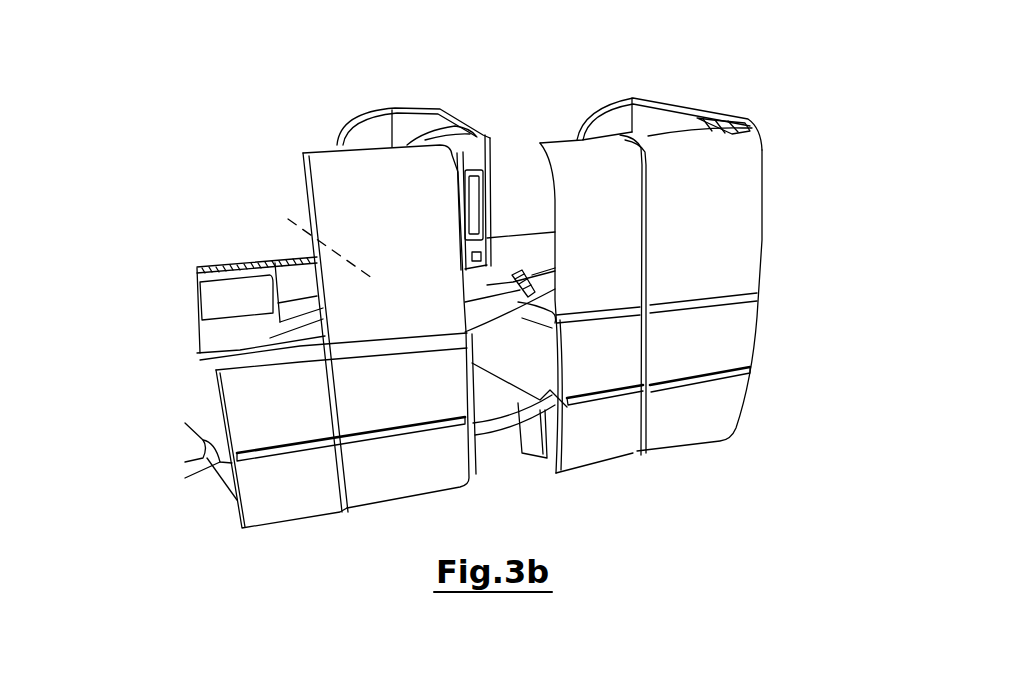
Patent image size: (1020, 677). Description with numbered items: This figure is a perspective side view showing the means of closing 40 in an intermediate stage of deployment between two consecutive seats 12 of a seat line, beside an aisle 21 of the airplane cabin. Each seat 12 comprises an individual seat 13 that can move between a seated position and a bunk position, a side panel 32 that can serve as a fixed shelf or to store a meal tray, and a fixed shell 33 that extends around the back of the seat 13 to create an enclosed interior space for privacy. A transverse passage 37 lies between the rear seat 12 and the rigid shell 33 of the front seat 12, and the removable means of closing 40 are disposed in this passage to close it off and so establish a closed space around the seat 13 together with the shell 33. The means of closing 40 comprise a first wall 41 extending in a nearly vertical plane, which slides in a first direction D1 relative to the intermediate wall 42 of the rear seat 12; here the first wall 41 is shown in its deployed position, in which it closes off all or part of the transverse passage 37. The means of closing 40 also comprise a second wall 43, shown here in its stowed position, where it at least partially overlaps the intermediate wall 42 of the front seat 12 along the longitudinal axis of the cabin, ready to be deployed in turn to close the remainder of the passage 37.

The seat 12 is at (399, 78).
The individual seat 13 is at (506, 246).
The aisle 21 is at (748, 497).
The side panel 32 is at (258, 390).
The fixed shell 33 is at (477, 128).
The transverse passage 37 is at (533, 490).
The means of closing 40 is at (313, 193).
The first wall 41 is at (597, 168).
The intermediate wall 42 is at (285, 218).
The second wall 43 is at (393, 190).
The first direction D1 is at (598, 280).